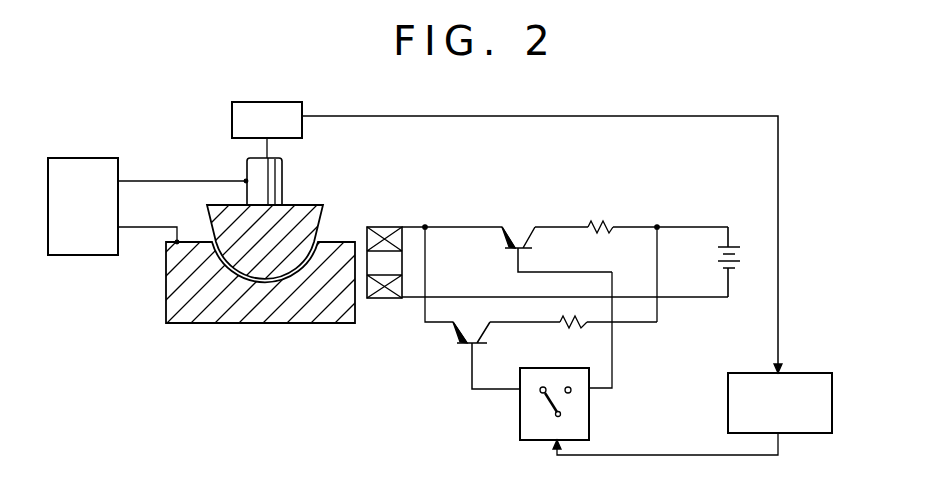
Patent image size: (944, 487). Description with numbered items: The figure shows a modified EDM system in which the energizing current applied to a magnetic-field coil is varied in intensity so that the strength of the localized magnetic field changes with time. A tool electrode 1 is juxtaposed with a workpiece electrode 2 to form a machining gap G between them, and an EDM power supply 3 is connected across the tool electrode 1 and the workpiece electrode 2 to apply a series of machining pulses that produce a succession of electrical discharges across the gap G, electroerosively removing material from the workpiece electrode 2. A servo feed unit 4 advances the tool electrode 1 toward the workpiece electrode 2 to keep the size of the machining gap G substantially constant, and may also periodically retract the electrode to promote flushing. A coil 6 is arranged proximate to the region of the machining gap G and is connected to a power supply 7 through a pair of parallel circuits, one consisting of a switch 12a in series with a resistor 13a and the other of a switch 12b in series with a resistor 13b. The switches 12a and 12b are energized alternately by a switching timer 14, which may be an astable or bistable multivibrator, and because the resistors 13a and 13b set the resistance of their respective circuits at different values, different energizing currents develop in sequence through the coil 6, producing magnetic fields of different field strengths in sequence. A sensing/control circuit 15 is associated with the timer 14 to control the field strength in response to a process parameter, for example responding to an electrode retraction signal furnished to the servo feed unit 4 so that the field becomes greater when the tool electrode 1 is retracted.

The tool electrode 1 is at (298, 204).
The workpiece electrode 2 is at (230, 318).
The EDM power supply 3 is at (75, 258).
The servo feed unit 4 is at (302, 104).
The coil 6 is at (386, 226).
The power supply 7 is at (716, 254).
The switch 12a is at (518, 231).
The switch 12b is at (472, 320).
The resistor 13a is at (601, 222).
The resistor 13b is at (572, 330).
The switching timer 14 is at (519, 410).
The sensing/control circuit 15 is at (728, 388).
The machining gap G is at (252, 282).